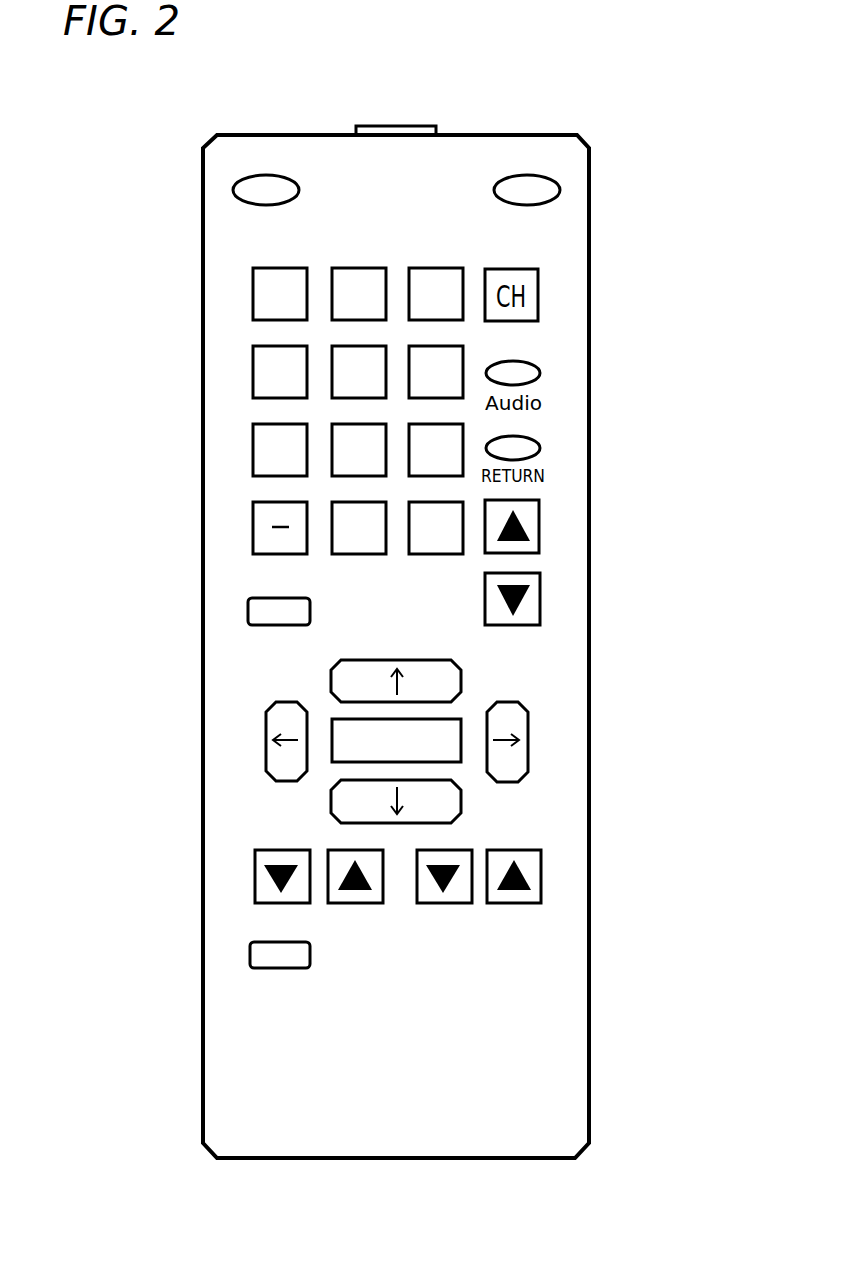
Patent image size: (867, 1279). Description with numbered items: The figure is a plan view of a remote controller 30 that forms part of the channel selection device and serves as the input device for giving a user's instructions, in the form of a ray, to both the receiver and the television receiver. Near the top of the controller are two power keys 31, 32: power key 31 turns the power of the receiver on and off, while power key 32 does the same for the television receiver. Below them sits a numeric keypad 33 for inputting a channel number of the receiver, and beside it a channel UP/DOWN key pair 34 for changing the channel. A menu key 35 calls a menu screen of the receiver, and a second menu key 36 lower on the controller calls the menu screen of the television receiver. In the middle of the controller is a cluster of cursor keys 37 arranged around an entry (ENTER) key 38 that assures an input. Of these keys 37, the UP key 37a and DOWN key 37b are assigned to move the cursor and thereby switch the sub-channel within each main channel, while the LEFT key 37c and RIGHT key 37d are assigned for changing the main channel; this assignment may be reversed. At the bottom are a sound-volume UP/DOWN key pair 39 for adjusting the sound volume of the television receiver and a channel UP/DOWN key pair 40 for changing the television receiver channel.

The remote controller 30 is at (441, 59).
The power key 31 is at (527, 175).
The power key 32 is at (268, 175).
The numeric keypad 33 is at (253, 247).
The channel UP/DOWN key pair 34 is at (547, 490).
The menu key 35 is at (248, 612).
The menu key 36 is at (250, 955).
The cursor keys 37 is at (561, 768).
The UP key 37a is at (461, 681).
The DOWN key 37b is at (461, 797).
The LEFT key 37c is at (266, 740).
The RIGHT key 37d is at (528, 725).
The entry (ENTER) key 38 is at (333, 762).
The sound-volume UP/DOWN key pair 39 is at (253, 923).
The channel UP/DOWN key pair 40 is at (543, 923).